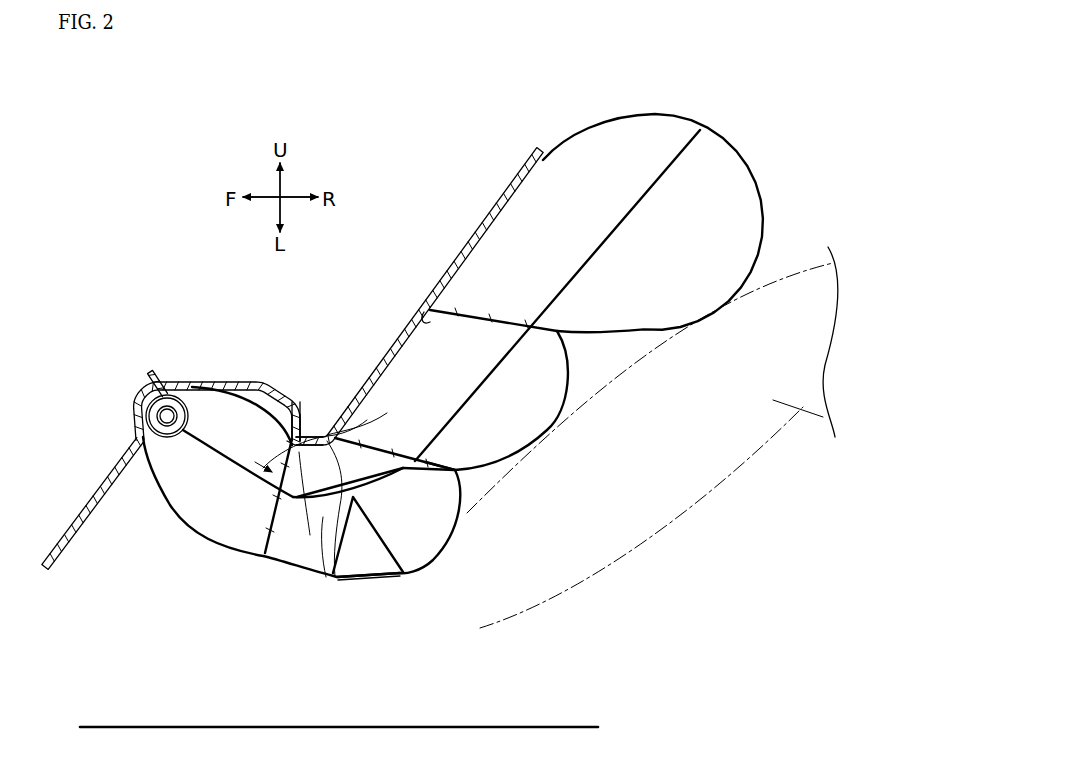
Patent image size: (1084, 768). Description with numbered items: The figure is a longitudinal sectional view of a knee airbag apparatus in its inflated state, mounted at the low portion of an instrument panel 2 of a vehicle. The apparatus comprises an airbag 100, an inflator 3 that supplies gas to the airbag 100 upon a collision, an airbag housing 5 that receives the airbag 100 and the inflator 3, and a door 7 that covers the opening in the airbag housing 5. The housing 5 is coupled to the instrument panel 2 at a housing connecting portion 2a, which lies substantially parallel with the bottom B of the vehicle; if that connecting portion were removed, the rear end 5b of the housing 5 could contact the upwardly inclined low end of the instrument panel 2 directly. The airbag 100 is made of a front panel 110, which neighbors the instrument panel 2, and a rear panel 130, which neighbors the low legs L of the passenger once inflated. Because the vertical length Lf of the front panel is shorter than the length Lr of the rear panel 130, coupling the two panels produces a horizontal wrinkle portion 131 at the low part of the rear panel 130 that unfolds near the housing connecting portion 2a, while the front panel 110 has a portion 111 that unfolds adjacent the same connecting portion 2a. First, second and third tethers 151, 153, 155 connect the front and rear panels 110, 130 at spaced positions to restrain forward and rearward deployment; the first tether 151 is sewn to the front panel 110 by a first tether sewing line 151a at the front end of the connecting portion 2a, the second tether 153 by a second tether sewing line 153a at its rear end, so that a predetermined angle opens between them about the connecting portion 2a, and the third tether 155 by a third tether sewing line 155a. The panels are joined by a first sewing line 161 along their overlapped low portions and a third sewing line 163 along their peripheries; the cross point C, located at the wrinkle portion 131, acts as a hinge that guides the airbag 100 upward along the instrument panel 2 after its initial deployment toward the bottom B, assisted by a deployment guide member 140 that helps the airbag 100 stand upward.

The instrument panel 2 is at (521, 171).
The housing connecting portion 2a is at (318, 428).
The inflator 3 is at (160, 420).
The airbag housing 5 is at (138, 403).
The rear end of the housing 5b is at (306, 438).
The door 7 is at (83, 527).
The airbag 100 is at (294, 437).
The front panel 110 is at (270, 405).
The portion of the front panel 111 is at (299, 457).
The rear panel 130 is at (173, 513).
The wrinkle portion 131 is at (380, 588).
The deployment guide member 140 is at (303, 448).
The first tether 151 is at (268, 540).
The first tether sewing line 151a is at (290, 443).
The second tether 153 is at (438, 463).
The second tether sewing line 153a is at (367, 420).
The third tether 155 is at (478, 311).
The third tether sewing line 155a is at (428, 312).
The first sewing line 161 is at (228, 468).
The third sewing line 163 is at (678, 152).
The bottom of the vehicle B is at (108, 726).
The cross point C is at (323, 517).
The low legs L is at (680, 513).
The vertical length of the front panel Lf is at (598, 123).
The length of the rear panel Lr is at (745, 158).